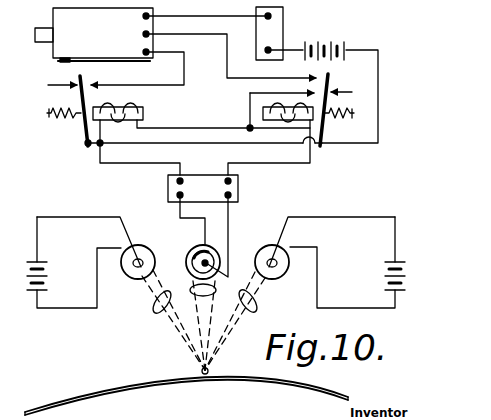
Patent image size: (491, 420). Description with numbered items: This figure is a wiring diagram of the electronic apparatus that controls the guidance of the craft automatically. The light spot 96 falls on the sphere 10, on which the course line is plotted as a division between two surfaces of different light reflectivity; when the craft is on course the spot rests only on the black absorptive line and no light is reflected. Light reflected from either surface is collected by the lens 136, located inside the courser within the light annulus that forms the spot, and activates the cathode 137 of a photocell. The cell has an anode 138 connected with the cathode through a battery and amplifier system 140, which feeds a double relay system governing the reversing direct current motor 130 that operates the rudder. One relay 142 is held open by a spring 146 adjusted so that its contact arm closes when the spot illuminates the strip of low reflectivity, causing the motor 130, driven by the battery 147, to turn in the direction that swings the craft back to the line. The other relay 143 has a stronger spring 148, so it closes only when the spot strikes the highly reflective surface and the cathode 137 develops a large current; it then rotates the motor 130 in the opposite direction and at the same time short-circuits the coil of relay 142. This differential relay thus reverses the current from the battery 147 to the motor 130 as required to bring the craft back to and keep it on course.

The reversible electrical motor 130 is at (94, 35).
The battery 147 is at (327, 34).
The relay 142 is at (165, 113).
The relay 143 is at (263, 113).
The spring 146 is at (56, 121).
The spring 148 is at (338, 108).
The battery and amplifier system 140 is at (203, 188).
The cathode 137 is at (216, 252).
The anode 138 is at (191, 265).
The lens 136 is at (195, 284).
The light spot 96 is at (196, 372).
The sphere 10 is at (91, 391).